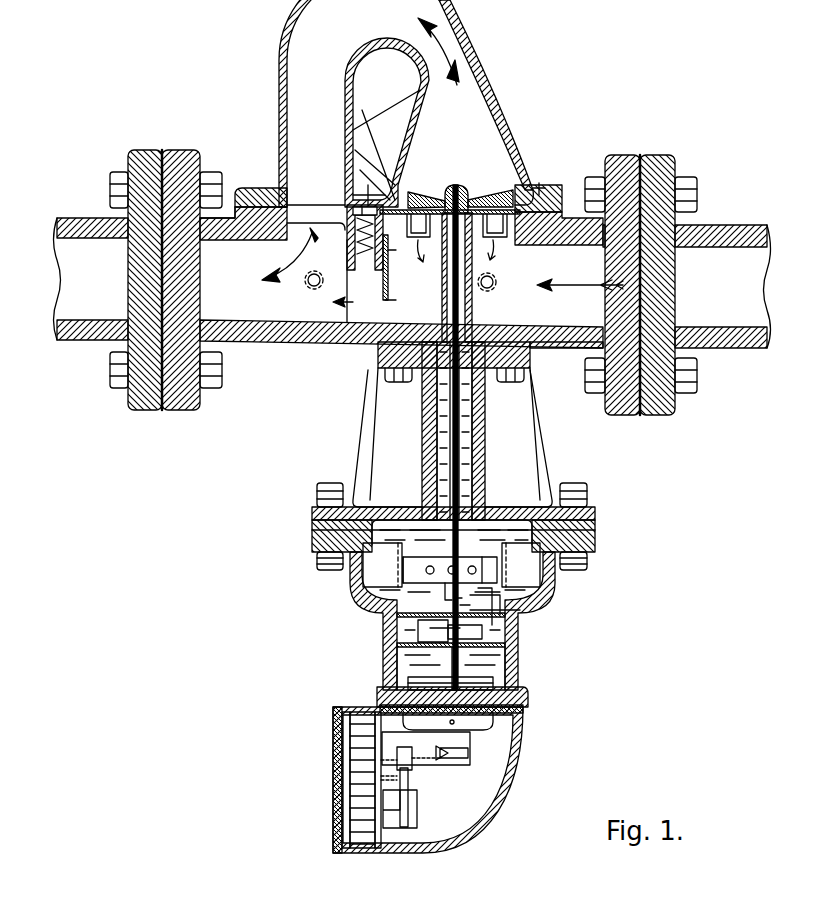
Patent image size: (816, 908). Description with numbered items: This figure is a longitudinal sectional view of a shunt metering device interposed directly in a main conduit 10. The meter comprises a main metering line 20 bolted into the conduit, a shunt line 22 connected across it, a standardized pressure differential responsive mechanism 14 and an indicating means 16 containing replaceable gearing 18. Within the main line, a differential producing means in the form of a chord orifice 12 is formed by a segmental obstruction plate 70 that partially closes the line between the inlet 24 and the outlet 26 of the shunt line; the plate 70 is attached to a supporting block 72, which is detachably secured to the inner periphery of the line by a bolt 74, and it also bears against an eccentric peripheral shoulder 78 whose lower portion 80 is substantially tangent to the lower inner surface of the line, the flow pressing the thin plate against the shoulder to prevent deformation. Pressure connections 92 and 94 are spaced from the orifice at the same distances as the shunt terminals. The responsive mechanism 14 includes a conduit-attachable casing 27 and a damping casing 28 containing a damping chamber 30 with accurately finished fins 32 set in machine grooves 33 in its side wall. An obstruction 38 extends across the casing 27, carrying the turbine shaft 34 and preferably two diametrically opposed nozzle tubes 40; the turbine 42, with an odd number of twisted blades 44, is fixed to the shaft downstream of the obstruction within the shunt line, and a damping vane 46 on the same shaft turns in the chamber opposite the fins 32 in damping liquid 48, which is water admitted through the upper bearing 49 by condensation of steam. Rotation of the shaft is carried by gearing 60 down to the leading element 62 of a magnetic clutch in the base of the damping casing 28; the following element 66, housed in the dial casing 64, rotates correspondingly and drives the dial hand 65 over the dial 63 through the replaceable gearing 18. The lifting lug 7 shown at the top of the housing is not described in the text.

The main conduit 10 is at (95, 218).
The chord orifice 12 is at (372, 330).
The pressure differential responsive mechanism 14 is at (546, 430).
The indicating means 16 is at (493, 798).
The gearing 18 is at (405, 825).
The main metering line 20 is at (230, 207).
The shunt line 22 is at (503, 78).
The inlet of shunt line 24 is at (535, 205).
The outlet of shunt line 26 is at (270, 190).
The casing 27 is at (553, 349).
The damping casing 28 is at (552, 470).
The damping chamber 30 is at (578, 502).
The fins 32 is at (395, 575).
The machine grooves 33 is at (385, 567).
The turbine shaft 34 is at (452, 440).
The obstruction 38 is at (540, 185).
The nozzles 40 is at (470, 250).
The turbine 42 is at (490, 194).
The blades 44 is at (440, 194).
The damping vane 46 is at (372, 606).
The damping liquid 48 is at (372, 530).
The upper bearing 49 is at (455, 183).
The gearing 60 is at (516, 636).
The leading element of magnetic clutch 62 is at (495, 683).
The dial 63 is at (352, 808).
The dial casing 64 is at (340, 707).
The dial hand 65 is at (349, 748).
The following element of magnetic clutch 66 is at (482, 724).
The obstruction plate 70 is at (390, 296).
The supporting block 72 is at (350, 302).
The bolt 74 is at (307, 267).
The shoulder 78 is at (365, 250).
The lower portion of shoulder 80 is at (398, 376).
The pressure connection 92 is at (487, 291).
The pressure connection 94 is at (312, 289).
The lifting lug 7 is at (355, 185).